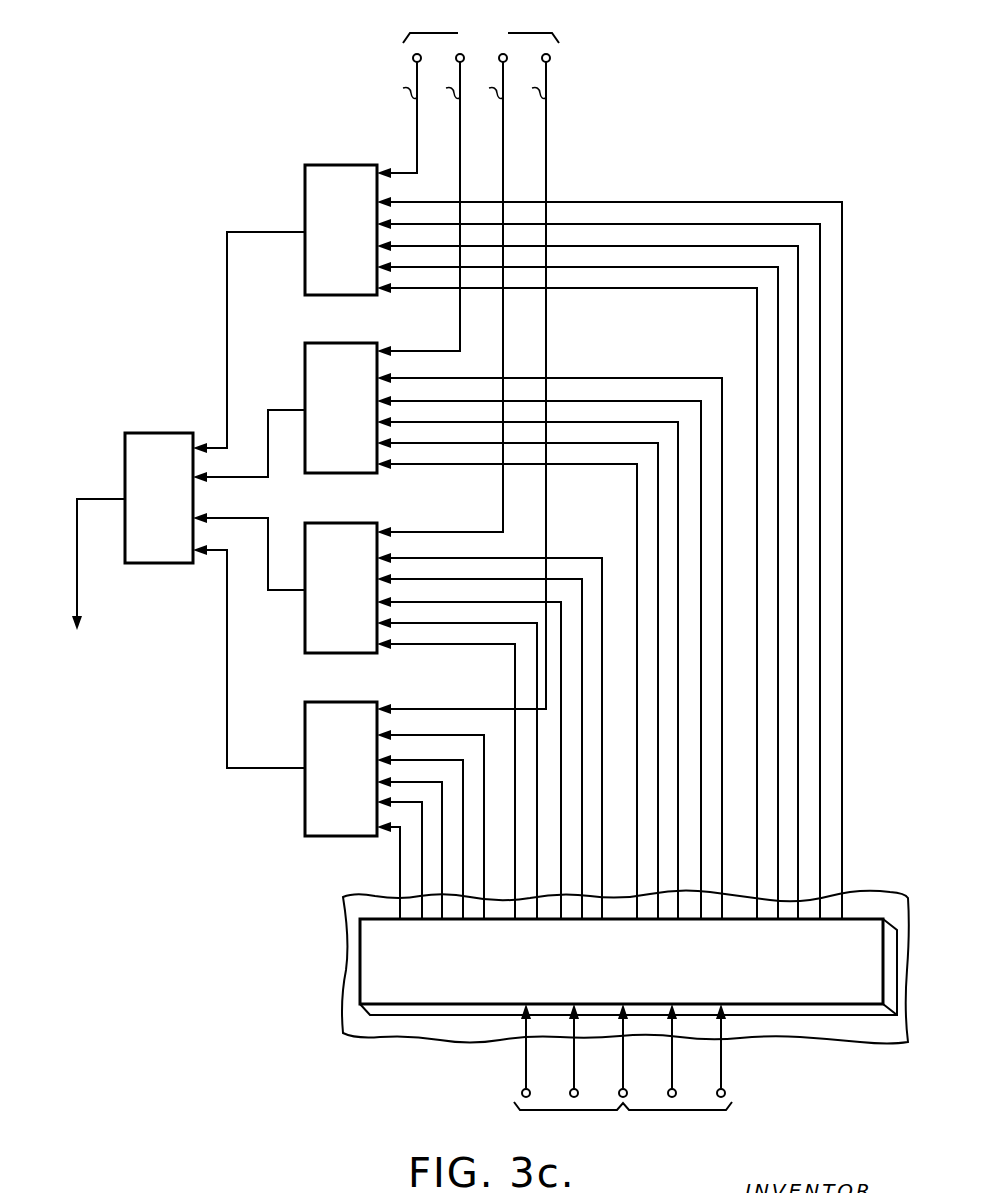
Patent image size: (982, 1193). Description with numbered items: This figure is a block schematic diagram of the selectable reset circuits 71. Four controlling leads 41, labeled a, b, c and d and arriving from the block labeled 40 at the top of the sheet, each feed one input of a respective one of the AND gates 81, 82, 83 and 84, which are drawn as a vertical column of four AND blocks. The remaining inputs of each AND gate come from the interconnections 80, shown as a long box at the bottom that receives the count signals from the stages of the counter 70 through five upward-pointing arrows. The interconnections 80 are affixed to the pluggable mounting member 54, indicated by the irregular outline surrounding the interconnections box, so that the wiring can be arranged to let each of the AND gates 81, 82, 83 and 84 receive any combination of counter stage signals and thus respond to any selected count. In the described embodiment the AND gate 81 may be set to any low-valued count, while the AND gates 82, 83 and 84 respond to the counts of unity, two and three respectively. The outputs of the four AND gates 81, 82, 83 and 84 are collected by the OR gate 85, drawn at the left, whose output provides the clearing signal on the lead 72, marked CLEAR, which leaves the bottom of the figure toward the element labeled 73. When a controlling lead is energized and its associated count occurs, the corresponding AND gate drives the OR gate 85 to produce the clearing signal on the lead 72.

The source register (FROM 40) 40 is at (470, 47).
The controlling leads 41 is at (466, 132).
The pluggable mounting member 54 is at (343, 922).
The counter 70 is at (636, 1156).
The selectable reset circuits 71 is at (735, 124).
The lead 72 is at (77, 582).
The destination (TO 73) 73 is at (91, 675).
The interconnections 80 is at (365, 985).
The AND gate 81 is at (305, 177).
The AND gate 82 is at (305, 355).
The AND gate 83 is at (305, 630).
The AND gate 84 is at (305, 810).
The OR gate 85 is at (160, 433).